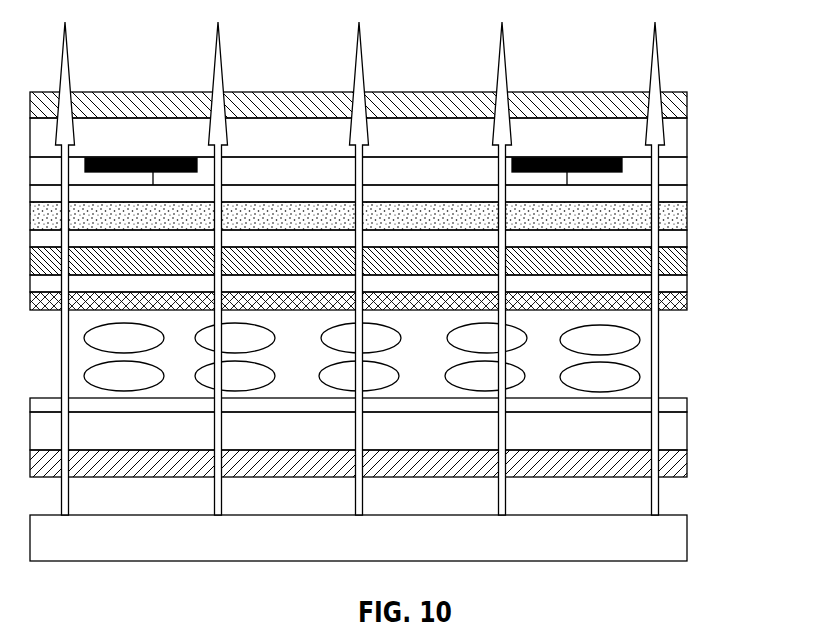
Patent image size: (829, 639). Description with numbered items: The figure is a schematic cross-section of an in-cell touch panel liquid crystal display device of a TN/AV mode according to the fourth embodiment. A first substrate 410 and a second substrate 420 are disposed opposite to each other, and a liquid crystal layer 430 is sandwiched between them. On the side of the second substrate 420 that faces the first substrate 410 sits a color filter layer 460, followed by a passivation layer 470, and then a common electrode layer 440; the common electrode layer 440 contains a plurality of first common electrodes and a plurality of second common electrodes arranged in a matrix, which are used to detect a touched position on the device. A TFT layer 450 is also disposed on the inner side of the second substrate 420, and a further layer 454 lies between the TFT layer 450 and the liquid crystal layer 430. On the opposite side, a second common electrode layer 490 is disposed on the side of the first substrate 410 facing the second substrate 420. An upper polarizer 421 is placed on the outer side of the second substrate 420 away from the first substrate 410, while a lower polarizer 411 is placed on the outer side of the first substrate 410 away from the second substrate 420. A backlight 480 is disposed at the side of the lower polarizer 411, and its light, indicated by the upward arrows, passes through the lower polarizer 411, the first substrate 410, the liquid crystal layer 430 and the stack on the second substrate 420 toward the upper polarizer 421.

The upper polarizer 421 is at (673, 110).
The second substrate 420 is at (672, 148).
The color filter layer 460 is at (672, 178).
The passivation layer 470 is at (672, 197).
The common electrode layer 440 is at (672, 222).
The TFT layer 450 is at (672, 262).
The cross-hatched layer 454 is at (672, 298).
The liquid crystal layer 430 is at (622, 370).
The second common electrode layer 490 is at (672, 406).
The first substrate 410 is at (672, 438).
The lower polarizer 411 is at (672, 462).
The backlight 480 is at (668, 540).